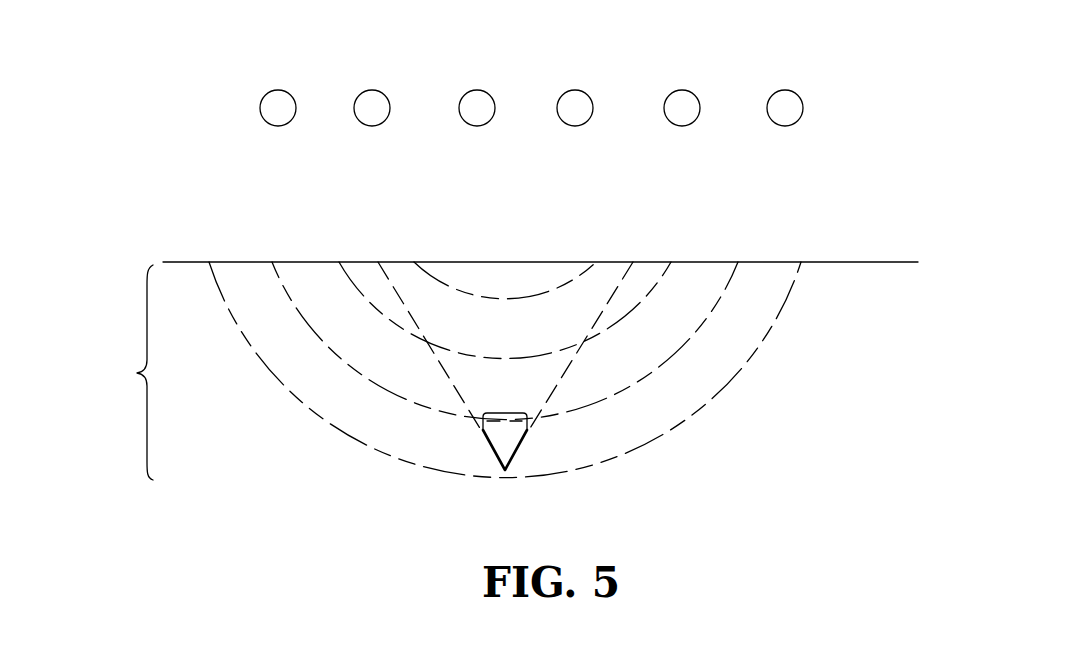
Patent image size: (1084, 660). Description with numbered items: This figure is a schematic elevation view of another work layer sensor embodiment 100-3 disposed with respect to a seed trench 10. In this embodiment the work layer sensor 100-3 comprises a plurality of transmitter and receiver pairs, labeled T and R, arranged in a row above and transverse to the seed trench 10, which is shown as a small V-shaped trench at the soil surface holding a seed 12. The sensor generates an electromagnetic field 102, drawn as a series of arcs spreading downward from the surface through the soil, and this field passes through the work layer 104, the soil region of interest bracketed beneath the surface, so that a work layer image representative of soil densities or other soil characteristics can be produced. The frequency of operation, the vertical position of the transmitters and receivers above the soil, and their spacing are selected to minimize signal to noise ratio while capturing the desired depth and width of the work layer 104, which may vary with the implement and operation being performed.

The work layer sensor embodiment 100-3 is at (898, 72).
The seed trench 10 is at (514, 283).
The seed 12 is at (510, 432).
The electromagnetic field 102 is at (700, 380).
The work layer 104 is at (137, 373).